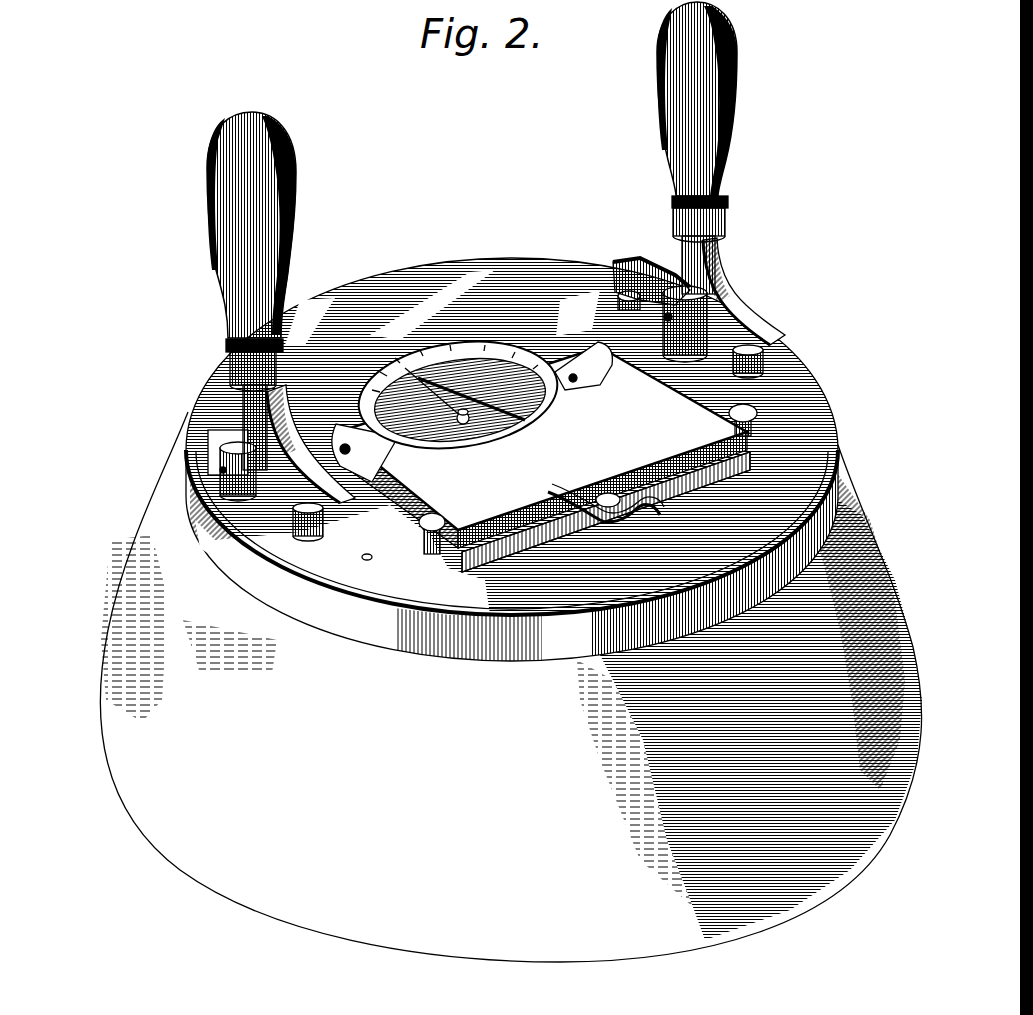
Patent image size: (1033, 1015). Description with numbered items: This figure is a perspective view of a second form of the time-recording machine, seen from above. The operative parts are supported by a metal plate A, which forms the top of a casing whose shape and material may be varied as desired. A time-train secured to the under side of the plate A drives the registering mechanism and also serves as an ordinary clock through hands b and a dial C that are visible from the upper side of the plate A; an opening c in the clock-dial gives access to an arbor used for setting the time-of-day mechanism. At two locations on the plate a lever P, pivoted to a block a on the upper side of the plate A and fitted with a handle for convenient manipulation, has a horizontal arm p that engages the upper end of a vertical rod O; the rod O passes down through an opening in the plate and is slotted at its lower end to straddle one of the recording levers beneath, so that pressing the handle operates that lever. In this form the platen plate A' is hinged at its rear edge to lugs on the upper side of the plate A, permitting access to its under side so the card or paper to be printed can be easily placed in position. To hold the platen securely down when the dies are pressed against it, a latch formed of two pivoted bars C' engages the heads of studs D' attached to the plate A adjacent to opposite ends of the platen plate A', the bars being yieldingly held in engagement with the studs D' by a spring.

The metal plate A is at (511, 610).
The plate A' is at (542, 447).
The lever P is at (476, 236).
The horizontal arm p is at (640, 262).
The block a is at (738, 290).
The vertical rod O is at (310, 538).
The stud D' is at (622, 468).
The pivoted bar C' is at (541, 467).
The opening c is at (600, 494).
The dial C is at (458, 397).
The hands b is at (458, 378).